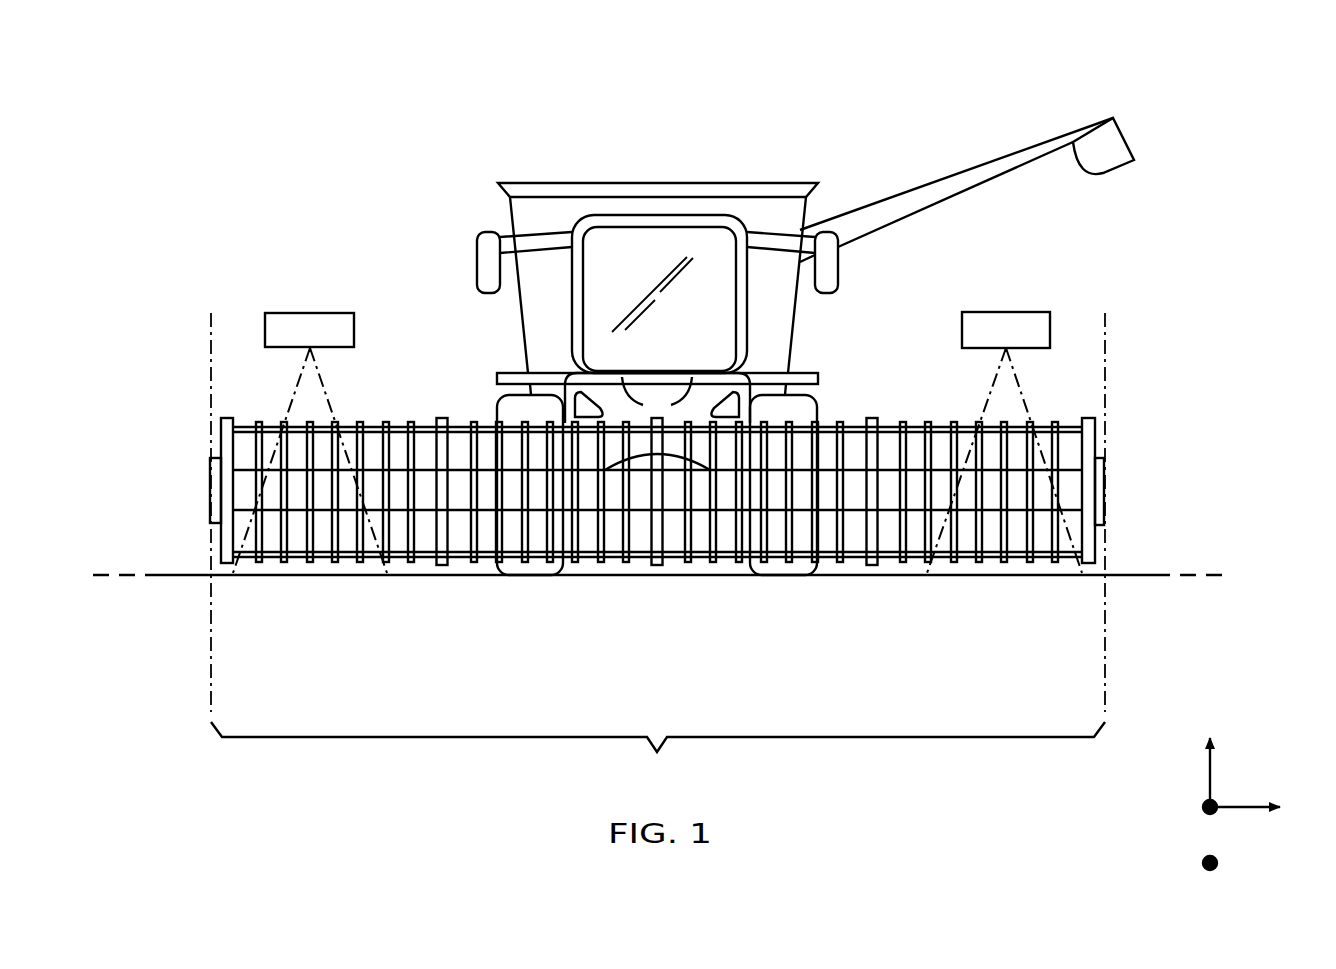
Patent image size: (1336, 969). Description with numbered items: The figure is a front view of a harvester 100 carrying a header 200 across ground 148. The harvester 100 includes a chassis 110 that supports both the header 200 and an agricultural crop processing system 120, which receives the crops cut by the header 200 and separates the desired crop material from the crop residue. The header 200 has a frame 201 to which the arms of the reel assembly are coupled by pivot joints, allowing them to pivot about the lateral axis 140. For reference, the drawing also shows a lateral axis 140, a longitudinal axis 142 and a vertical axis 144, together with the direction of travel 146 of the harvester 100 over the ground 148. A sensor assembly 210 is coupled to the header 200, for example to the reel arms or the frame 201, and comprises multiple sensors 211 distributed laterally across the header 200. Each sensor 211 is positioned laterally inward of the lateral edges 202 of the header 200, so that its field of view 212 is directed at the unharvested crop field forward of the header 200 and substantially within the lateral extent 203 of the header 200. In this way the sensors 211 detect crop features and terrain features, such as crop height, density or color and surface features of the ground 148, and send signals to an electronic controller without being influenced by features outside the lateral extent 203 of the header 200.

The harvester 100 is at (805, 323).
The chassis 110 is at (832, 384).
The agricultural crop processing system 120 is at (812, 320).
The lateral axis 140 is at (1219, 797).
The longitudinal axis 142 is at (1203, 805).
The vertical axis 144 is at (1208, 778).
The direction of travel 146 is at (1203, 862).
The ground 148 is at (863, 577).
The header 200 is at (657, 463).
The frame 201 is at (428, 470).
The lateral edges 202 is at (211, 637).
The lateral extent 203 is at (658, 754).
The sensor assembly 210 is at (691, 406).
The sensors 211 is at (310, 313).
The field of view 212 is at (312, 392).